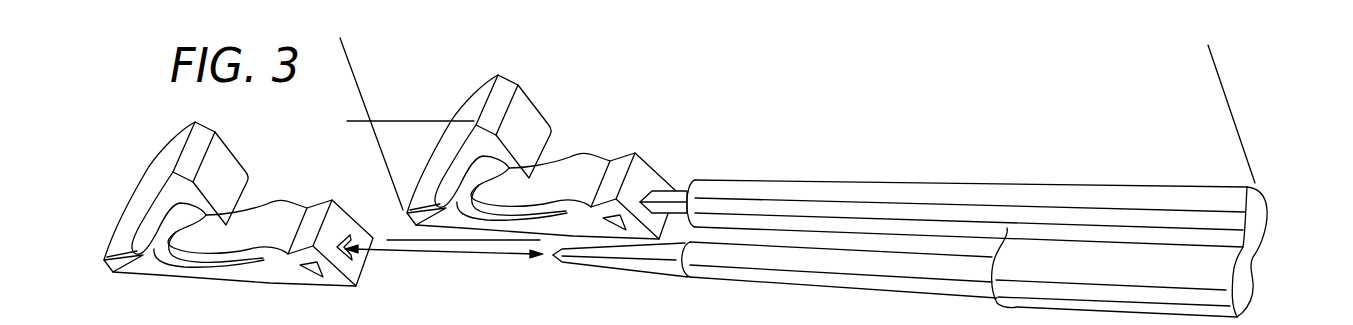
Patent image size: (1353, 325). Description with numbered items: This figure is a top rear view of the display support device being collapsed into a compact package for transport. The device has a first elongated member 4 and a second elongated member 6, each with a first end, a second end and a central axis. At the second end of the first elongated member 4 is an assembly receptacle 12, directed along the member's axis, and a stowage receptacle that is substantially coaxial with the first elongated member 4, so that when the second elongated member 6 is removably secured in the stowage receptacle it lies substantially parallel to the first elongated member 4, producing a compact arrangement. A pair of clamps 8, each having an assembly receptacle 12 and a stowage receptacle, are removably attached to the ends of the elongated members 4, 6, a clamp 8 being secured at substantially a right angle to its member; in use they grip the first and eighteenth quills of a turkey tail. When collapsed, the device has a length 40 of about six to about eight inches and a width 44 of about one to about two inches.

The first elongated member 4 is at (935, 190).
The second elongated member 6 is at (835, 277).
The clamp 8 is at (204, 133).
The assembly receptacle 12 is at (1250, 217).
The length of the display support device while collapsed 40 is at (1208, 43).
The width of the display support device while collapsed 44 is at (393, 238).